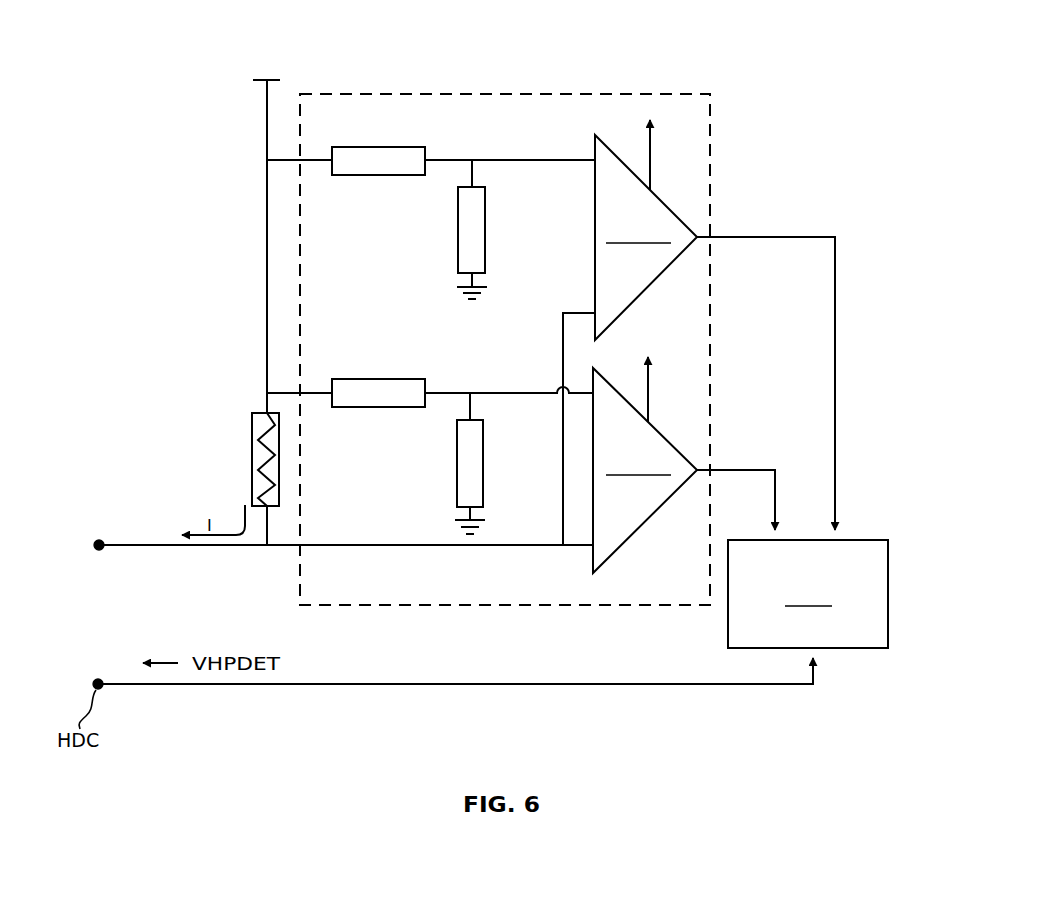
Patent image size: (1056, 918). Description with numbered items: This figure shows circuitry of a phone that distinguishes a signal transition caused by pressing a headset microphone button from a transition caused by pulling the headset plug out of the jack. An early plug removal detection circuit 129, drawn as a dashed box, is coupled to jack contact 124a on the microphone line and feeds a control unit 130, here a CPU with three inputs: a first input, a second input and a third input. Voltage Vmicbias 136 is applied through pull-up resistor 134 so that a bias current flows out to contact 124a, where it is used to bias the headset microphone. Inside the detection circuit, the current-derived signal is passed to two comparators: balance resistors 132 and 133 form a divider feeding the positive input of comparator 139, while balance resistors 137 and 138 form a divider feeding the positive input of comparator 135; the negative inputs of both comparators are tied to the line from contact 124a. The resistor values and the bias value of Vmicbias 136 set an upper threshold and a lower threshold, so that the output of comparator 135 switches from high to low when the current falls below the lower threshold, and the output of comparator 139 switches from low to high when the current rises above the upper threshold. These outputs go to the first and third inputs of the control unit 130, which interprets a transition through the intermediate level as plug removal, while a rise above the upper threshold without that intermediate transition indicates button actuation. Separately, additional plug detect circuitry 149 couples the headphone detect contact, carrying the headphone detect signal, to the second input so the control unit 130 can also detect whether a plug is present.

The voltage Vmicbias 136 is at (330, 56).
The early plug removal detection circuit 129 is at (712, 147).
The balance resistor 132 is at (424, 149).
The balance resistor 133 is at (485, 238).
The comparator 139 is at (646, 226).
The balance resistor 137 is at (425, 381).
The balance resistor 138 is at (483, 473).
The comparator 135 is at (645, 460).
The pull-up resistor 134 is at (252, 478).
The jack contact 124a is at (97, 551).
The control unit 130 is at (888, 540).
The additional plug detect circuitry 149 is at (614, 722).